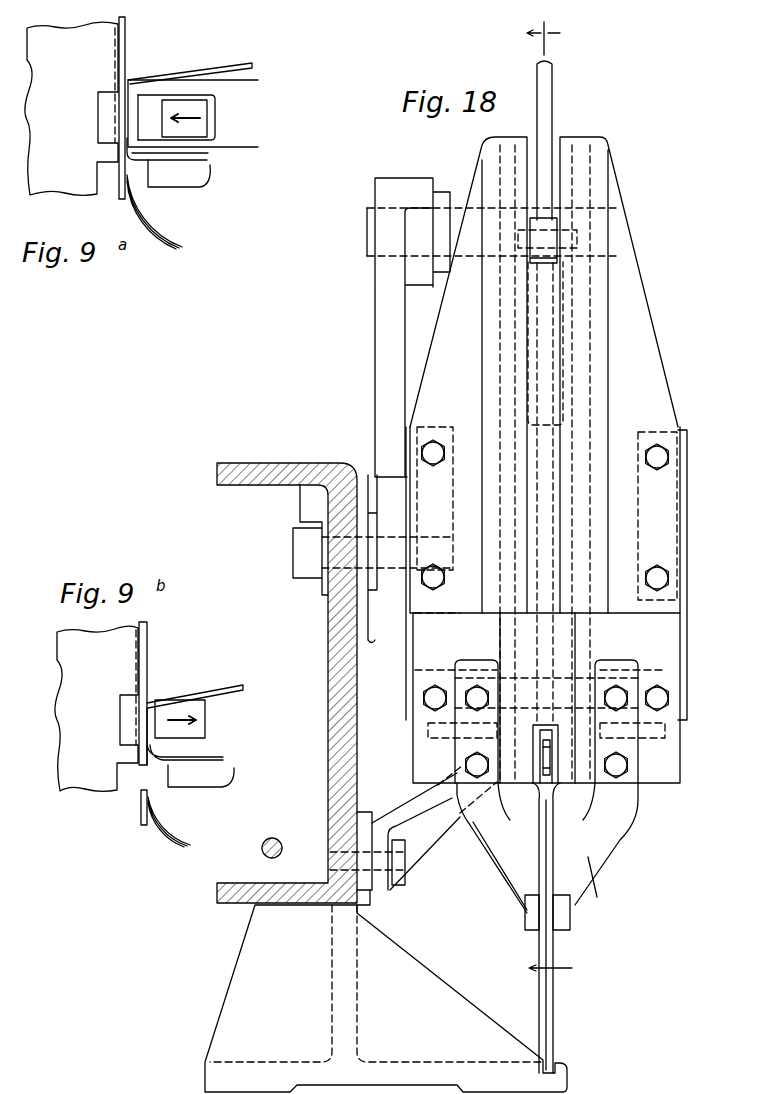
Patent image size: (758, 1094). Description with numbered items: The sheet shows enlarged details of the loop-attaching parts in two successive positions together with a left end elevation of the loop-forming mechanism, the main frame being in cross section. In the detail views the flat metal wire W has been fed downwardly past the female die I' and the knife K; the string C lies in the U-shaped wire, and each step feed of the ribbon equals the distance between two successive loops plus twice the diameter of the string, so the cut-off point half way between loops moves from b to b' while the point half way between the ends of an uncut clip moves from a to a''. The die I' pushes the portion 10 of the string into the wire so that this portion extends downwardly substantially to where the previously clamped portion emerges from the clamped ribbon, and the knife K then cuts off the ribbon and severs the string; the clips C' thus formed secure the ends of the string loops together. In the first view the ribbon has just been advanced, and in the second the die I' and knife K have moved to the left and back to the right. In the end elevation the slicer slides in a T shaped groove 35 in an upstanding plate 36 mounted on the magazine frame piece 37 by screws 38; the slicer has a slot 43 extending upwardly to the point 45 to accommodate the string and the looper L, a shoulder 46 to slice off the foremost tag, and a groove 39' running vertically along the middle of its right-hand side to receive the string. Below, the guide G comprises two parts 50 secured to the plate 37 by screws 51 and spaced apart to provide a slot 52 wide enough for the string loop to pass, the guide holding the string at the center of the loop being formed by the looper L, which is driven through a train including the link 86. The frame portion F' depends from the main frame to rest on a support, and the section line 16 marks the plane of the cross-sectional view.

In FIG. 9A, the flat metal wire W is at (126, 34).
In FIG. 9B, the flat metal wire W is at (148, 653).
In FIG. 9A, the portion of the string 10 is at (143, 107).
In FIG. 9B, the portion of the string 10 is at (137, 729).
In FIG. 9A, the female die I' is at (186, 117).
In FIG. 9B, the female die I' is at (191, 716).
In FIG. 9A, the knife K is at (198, 178).
In FIG. 9B, the knife K is at (196, 782).
In FIG. 9B, the point half way between the ends of an uncut clip a is at (173, 688).
In FIG. 9B, the point half way between loops b is at (116, 718).
In FIG. 9B, the point half way between the ends of an uncut clip (after feed) a'' is at (112, 764).
In FIG. 9B, the point half way between loops (after feed) b' is at (113, 797).
In FIG. 9B, the clip C' is at (119, 816).
In FIG. 9B, the string C is at (167, 828).
In FIG. 18, the section line 16 is at (534, 491).
In FIG. 18, the upstanding plate 36 is at (633, 287).
In FIG. 18, the groove 39' is at (585, 493).
In FIG. 18, the T shaped groove 35 is at (590, 412).
In FIG. 18, the screws 38 is at (433, 452).
In FIG. 18, the magazine frame piece 37 is at (687, 494).
In FIG. 18, the point 45 is at (540, 540).
In FIG. 18, the shoulder 46 is at (585, 600).
In FIG. 18, the slot 43 is at (550, 660).
In FIG. 18, the screws 51 is at (620, 765).
In FIG. 18, the depending portion of the main frame F' is at (294, 684).
In FIG. 18, the link 86 is at (272, 838).
In FIG. 18, the looper L is at (530, 784).
In FIG. 18, the guide parts 50 is at (500, 843).
In FIG. 18, the slot 52 is at (547, 963).
In FIG. 18, the slotted guide G is at (555, 1000).